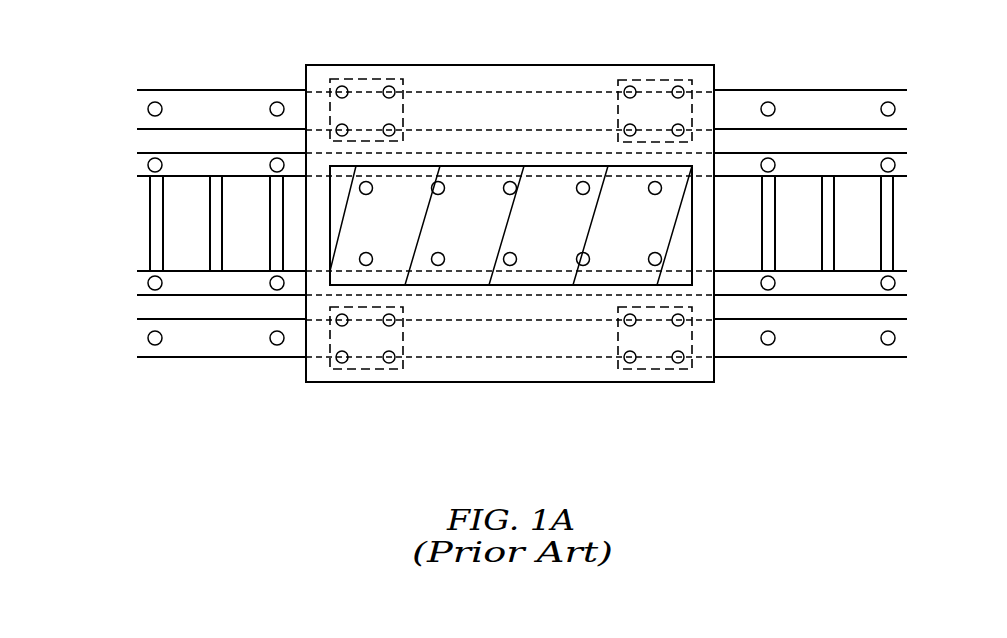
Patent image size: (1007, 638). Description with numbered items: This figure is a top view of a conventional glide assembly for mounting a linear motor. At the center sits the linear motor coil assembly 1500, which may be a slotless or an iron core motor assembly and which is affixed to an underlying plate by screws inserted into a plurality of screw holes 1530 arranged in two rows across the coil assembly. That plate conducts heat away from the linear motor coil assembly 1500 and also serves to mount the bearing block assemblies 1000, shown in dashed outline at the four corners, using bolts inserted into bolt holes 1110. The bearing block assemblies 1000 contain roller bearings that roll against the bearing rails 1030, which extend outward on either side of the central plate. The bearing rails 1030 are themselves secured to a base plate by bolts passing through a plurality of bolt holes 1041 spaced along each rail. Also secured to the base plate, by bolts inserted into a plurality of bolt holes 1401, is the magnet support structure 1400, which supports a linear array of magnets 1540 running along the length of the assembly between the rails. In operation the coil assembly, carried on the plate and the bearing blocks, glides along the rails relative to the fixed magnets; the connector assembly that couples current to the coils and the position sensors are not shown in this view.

The bearing block assemblies 1000 is at (355, 92).
The bearing rails 1030 is at (188, 107).
The bolt holes 1041 is at (147, 338).
The bolt holes 1110 is at (327, 364).
The magnet support structure 1400 is at (917, 207).
The bolt holes 1401 is at (273, 155).
The linear motor coil assembly 1500 is at (676, 223).
The screw holes 1530 is at (447, 182).
The linear array of magnets 1540 is at (788, 195).